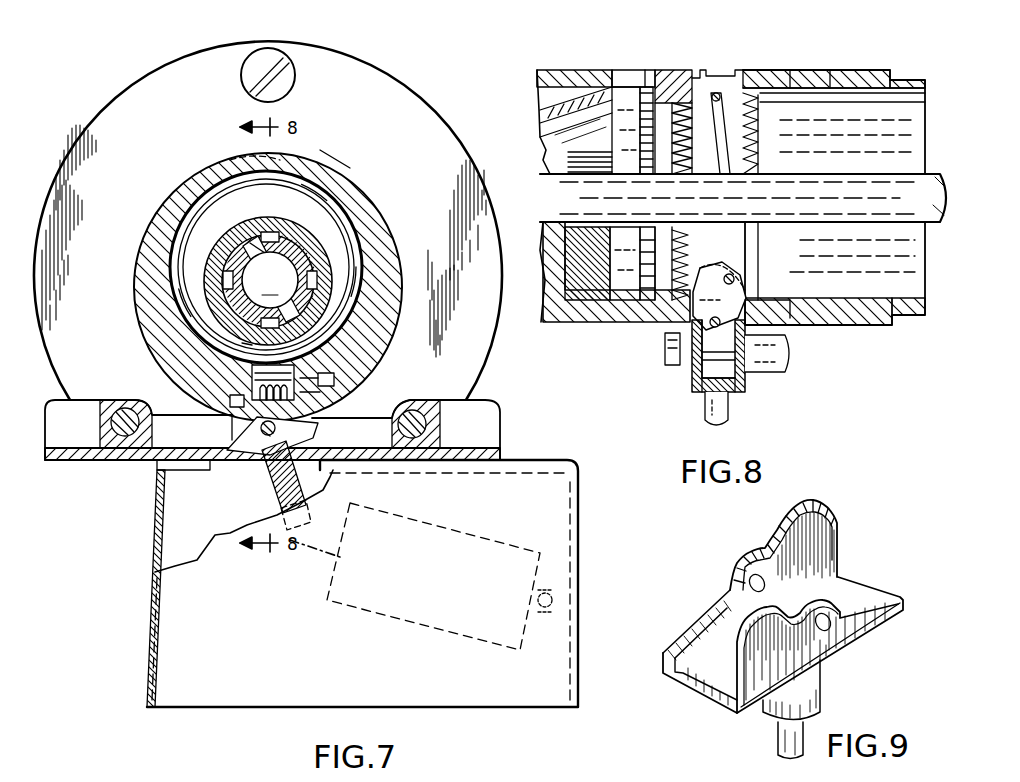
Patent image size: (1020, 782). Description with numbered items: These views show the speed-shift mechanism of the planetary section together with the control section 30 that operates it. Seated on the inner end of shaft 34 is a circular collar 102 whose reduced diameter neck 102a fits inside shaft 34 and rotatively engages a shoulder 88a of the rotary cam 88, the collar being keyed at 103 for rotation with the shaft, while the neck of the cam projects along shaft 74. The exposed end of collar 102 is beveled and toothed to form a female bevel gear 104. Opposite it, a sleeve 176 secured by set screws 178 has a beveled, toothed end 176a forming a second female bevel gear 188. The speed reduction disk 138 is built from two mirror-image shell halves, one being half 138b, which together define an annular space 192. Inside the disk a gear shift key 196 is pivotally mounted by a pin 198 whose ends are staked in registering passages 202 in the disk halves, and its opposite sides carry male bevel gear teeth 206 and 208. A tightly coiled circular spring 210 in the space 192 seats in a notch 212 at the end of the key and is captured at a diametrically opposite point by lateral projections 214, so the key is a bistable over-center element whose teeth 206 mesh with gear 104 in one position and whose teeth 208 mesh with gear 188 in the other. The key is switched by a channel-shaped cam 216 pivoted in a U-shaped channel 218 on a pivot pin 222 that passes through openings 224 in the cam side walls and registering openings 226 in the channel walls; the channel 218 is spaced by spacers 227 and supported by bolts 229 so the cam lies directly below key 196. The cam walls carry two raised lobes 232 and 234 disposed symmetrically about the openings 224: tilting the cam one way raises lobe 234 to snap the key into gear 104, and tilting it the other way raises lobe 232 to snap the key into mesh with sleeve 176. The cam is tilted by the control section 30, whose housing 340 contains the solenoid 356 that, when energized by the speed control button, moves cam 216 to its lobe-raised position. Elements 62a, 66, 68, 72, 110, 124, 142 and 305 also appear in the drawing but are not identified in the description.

In FIG. 7, the control section 30 is at (517, 445).
In FIG. 8, the shaft 34 is at (548, 323).
In FIG. 8, the housing wall portion 62a is at (541, 126).
In FIG. 8, the housing flange 66 is at (540, 112).
In FIG. 8, the housing cover 68 is at (537, 70).
In FIG. 8, the bearing support 72 is at (567, 252).
In FIG. 7, the shaft 74 is at (270, 280).
In FIG. 8, the shaft 74 is at (900, 182).
In FIG. 8, the rotary cam 88 is at (602, 312).
In FIG. 8, the shoulder 88a is at (614, 330).
In FIG. 8, the circular collar 102 is at (660, 87).
In FIG. 8, the reduced diameter neck 102a is at (647, 90).
In FIG. 8, the key 103 is at (645, 87).
In FIG. 8, the female bevel gear 104 is at (690, 85).
In FIG. 7, the key 110 is at (262, 240).
In FIG. 7, the bearing 124 is at (212, 250).
In FIG. 7, the speed reduction disk 138 is at (335, 214).
In FIG. 8, the speed reduction disk 138 is at (716, 92).
In FIG. 7, the shell half 138b is at (335, 160).
In FIG. 7, the coupling hub 142 is at (286, 238).
In FIG. 8, the sleeve 176 is at (822, 72).
In FIG. 8, the end of sleeve 176a is at (738, 72).
In FIG. 8, the set screws 178 is at (872, 72).
In FIG. 8, the female bevel gear 188 is at (758, 126).
In FIG. 7, the annular space 192 is at (188, 192).
In FIG. 7, the gear shift key 196 is at (252, 384).
In FIG. 8, the gear shift key 196 is at (692, 302).
In FIG. 7, the pin 198 is at (236, 424).
In FIG. 8, the pin 198 is at (746, 330).
In FIG. 7, the registering passages 202 is at (240, 402).
In FIG. 8, the registering passages 202 is at (842, 326).
In FIG. 7, the male bevel gear teeth 206 is at (336, 380).
In FIG. 8, the male bevel gear teeth 206 is at (755, 236).
In FIG. 8, the male bevel gear teeth 208 is at (722, 320).
In FIG. 7, the circular spring 210 is at (362, 262).
In FIG. 8, the circular spring 210 is at (758, 150).
In FIG. 7, the notch 212 is at (240, 343).
In FIG. 8, the notch 212 is at (735, 280).
In FIG. 7, the lateral projections 214 is at (235, 160).
In FIG. 8, the lateral projections 214 is at (722, 88).
In FIG. 7, the channel-shaped cam 216 is at (318, 432).
In FIG. 8, the channel-shaped cam 216 is at (692, 360).
In FIG. 9, the channel-shaped cam 216 is at (688, 688).
In FIG. 8, the U-shaped channel 218 is at (705, 390).
In FIG. 7, the pivot pin 222 is at (262, 452).
In FIG. 8, the pivot pin 222 is at (712, 396).
In FIG. 8, the openings 224 is at (735, 400).
In FIG. 9, the openings 224 is at (830, 614).
In FIG. 8, the registering openings 226 is at (746, 392).
In FIG. 8, the spacers 227 is at (790, 362).
In FIG. 7, the bolts 229 is at (418, 410).
In FIG. 8, the bolts 229 is at (665, 350).
In FIG. 7, the raised lobe 232 is at (338, 401).
In FIG. 9, the raised lobe 232 is at (820, 504).
In FIG. 9, the raised lobe 234 is at (738, 624).
In FIG. 7, the screw 305 is at (293, 86).
In FIG. 7, the housing 340 is at (157, 512).
In FIG. 7, the solenoid 356 is at (402, 622).